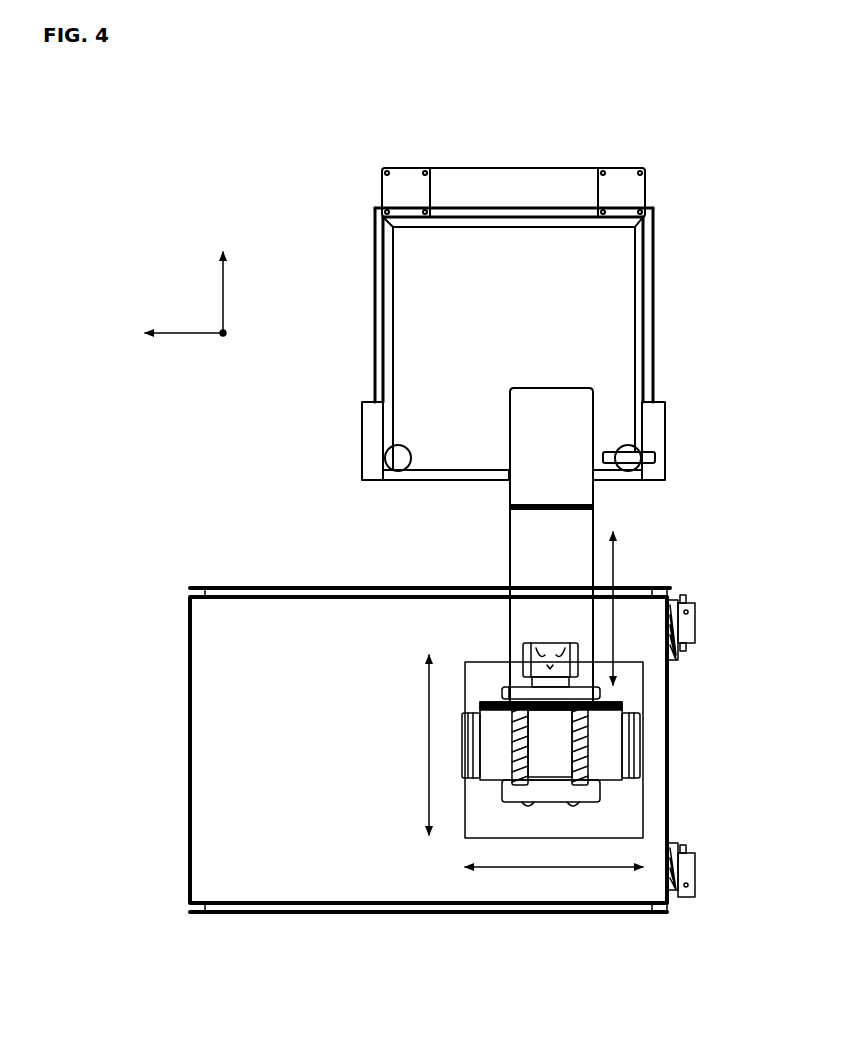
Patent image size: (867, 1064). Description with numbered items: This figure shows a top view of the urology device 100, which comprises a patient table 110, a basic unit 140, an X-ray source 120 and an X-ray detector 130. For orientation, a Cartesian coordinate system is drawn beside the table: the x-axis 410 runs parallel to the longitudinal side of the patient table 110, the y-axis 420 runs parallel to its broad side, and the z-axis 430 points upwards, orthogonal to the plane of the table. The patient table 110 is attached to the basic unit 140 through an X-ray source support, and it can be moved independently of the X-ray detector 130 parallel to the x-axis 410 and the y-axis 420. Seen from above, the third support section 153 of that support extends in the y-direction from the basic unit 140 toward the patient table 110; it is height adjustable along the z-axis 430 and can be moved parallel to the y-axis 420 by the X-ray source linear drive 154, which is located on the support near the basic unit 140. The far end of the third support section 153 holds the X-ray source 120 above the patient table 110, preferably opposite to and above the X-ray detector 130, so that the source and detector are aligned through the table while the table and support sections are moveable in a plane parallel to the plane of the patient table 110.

The urology device 100 is at (693, 280).
The patient table 110 is at (160, 772).
The X-ray source 120 is at (645, 748).
The X-ray detector 130 is at (645, 802).
The basic unit 140 is at (516, 168).
The third support section 153 is at (509, 548).
The X-ray source linear drive 154 is at (595, 500).
The x-axis 410 is at (173, 335).
The y-axis 420 is at (222, 288).
The z-axis 430 is at (223, 337).